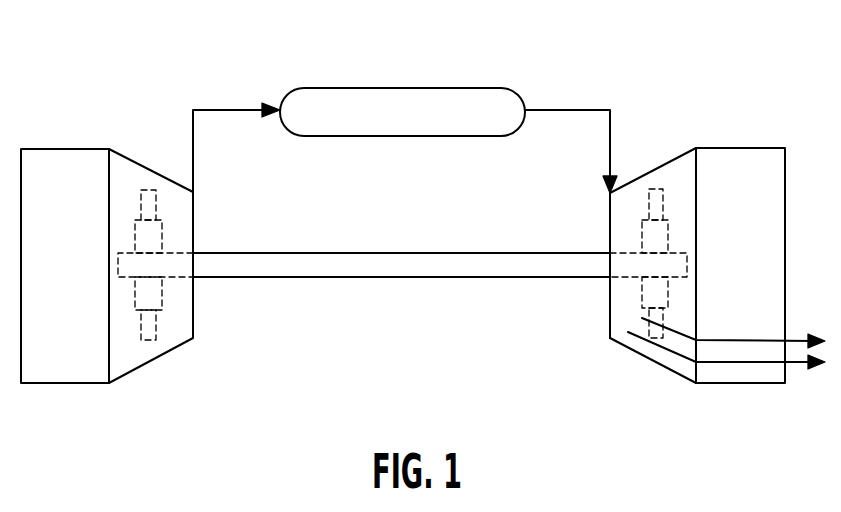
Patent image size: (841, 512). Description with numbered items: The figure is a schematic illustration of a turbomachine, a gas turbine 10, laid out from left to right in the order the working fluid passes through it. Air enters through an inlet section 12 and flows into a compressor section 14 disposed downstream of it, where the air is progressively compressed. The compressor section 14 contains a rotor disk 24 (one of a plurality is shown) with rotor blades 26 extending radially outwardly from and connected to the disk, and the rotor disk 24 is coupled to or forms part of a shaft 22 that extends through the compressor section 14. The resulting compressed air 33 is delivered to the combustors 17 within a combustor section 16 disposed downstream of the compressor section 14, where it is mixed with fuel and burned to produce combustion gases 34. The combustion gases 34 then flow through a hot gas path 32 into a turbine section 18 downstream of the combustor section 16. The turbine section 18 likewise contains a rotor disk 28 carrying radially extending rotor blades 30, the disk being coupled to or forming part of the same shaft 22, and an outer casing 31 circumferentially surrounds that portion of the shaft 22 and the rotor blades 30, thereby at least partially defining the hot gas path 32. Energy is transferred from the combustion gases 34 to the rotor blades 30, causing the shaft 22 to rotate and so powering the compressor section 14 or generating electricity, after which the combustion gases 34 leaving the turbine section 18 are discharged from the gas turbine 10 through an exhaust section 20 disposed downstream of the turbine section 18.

The gas turbine 10 is at (246, 51).
The inlet section 12 is at (40, 149).
The compressor section 14 is at (142, 163).
The combustor section 16 is at (406, 81).
The combustors 17 is at (460, 88).
The turbine section 18 is at (660, 261).
The exhaust section 20 is at (760, 148).
The shaft 22 is at (352, 278).
The rotor disk 24 is at (135, 238).
The rotor blades 26 is at (140, 200).
The rotor disk 28 is at (642, 232).
The rotor blades 30 is at (658, 188).
The outer casing 31 is at (678, 373).
The hot gas path 32 is at (652, 357).
The compressed air 33 is at (211, 112).
The combustion gases 34 is at (557, 112).